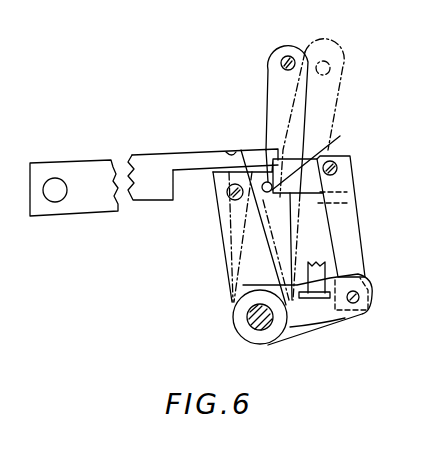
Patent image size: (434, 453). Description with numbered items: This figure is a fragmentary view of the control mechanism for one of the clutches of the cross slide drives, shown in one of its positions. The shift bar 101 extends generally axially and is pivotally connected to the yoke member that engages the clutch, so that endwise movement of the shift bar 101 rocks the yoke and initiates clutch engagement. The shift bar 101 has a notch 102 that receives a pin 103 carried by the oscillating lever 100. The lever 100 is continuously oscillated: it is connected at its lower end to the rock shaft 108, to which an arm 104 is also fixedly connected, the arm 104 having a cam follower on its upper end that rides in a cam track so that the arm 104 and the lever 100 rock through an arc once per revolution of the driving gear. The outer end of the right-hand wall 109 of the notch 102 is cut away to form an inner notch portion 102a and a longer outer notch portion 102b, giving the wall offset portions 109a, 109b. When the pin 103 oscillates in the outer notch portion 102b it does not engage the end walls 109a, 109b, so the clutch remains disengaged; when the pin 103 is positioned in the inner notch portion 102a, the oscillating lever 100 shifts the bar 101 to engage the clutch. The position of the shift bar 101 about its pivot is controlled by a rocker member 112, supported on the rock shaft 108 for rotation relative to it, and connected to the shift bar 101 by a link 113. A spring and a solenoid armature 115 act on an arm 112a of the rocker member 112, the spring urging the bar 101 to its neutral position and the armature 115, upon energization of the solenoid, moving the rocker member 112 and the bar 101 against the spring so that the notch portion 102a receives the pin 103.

The oscillating lever 100 is at (224, 250).
The shift bar 101 is at (148, 200).
The notch 102 is at (191, 189).
The inner notch portion 102a is at (187, 172).
The outer notch portion 102b is at (272, 206).
The pin 103 is at (213, 208).
The arm 104 is at (272, 119).
The rock shaft 108 is at (262, 328).
The right-hand wall 109 is at (282, 153).
The offset portion 109a is at (232, 152).
The offset portion 109b is at (340, 136).
The rocker member 112 is at (233, 318).
The arm of rocker member 112a is at (323, 323).
The link 113 is at (358, 248).
The armature 115 is at (322, 271).